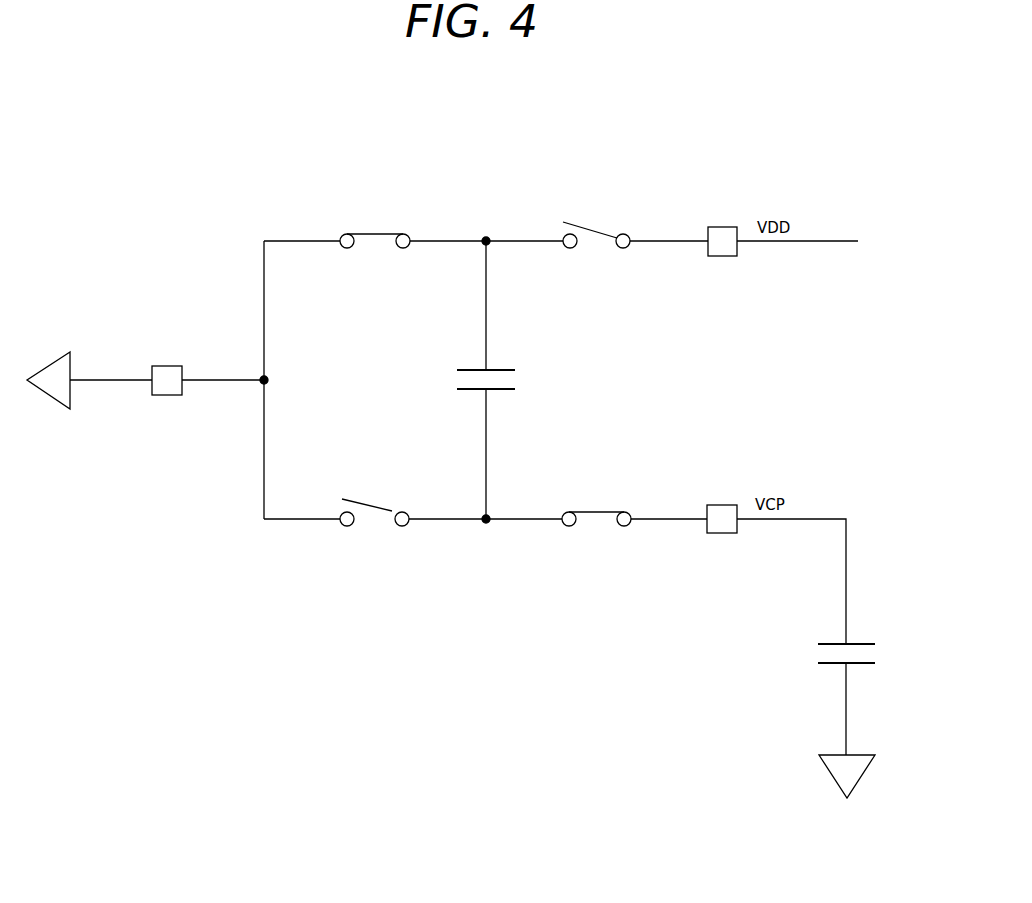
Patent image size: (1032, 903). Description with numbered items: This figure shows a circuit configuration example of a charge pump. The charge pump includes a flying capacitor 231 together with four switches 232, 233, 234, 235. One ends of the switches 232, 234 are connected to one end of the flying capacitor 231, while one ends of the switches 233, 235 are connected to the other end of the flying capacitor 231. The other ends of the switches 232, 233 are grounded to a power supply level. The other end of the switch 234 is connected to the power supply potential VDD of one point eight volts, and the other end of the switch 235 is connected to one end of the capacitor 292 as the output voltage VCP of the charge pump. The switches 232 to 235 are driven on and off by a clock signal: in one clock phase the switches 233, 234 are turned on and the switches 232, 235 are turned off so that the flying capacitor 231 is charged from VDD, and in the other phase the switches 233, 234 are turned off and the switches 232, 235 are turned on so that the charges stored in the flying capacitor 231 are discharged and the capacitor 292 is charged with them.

The flying capacitor 231 is at (517, 346).
The switch 232 is at (377, 206).
The switch 233 is at (376, 485).
The switch 234 is at (599, 208).
The switch 235 is at (600, 500).
The capacitor 292 is at (816, 680).